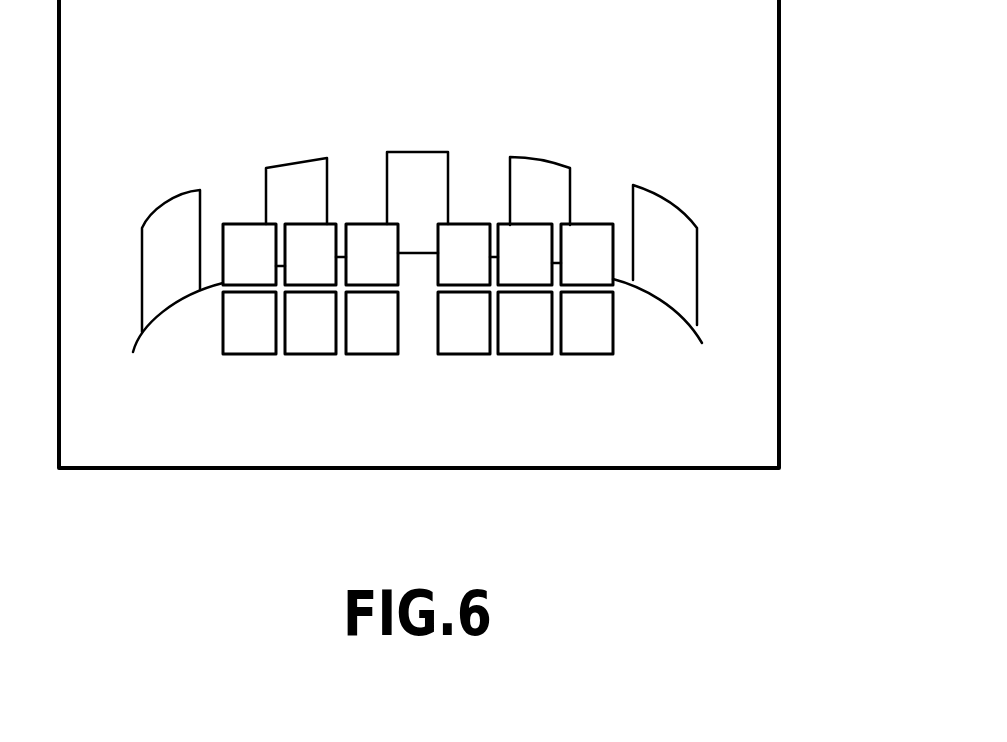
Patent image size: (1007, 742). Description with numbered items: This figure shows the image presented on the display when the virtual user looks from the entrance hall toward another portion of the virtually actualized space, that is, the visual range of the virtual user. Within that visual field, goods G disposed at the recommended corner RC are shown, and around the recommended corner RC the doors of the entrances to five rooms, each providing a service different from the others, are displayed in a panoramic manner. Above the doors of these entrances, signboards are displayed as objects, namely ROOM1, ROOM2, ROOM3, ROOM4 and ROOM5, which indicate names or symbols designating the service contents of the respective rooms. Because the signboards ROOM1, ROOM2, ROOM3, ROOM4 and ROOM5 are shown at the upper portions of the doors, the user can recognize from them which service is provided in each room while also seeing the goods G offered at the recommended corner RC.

The goods G is at (245, 345).
The recommended corner RC is at (665, 320).
The signboard object Room 1 ROOM1 is at (670, 237).
The signboard object Room 2 ROOM2 is at (545, 170).
The signboard object Room 3 ROOM3 is at (415, 167).
The signboard object Room 4 ROOM4 is at (287, 172).
The signboard object Room 5 ROOM5 is at (155, 243).